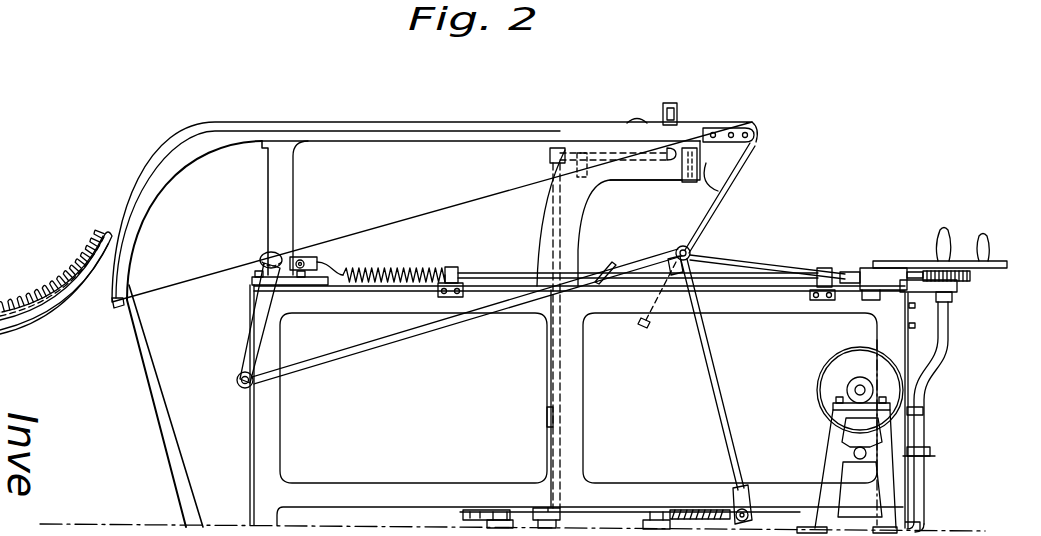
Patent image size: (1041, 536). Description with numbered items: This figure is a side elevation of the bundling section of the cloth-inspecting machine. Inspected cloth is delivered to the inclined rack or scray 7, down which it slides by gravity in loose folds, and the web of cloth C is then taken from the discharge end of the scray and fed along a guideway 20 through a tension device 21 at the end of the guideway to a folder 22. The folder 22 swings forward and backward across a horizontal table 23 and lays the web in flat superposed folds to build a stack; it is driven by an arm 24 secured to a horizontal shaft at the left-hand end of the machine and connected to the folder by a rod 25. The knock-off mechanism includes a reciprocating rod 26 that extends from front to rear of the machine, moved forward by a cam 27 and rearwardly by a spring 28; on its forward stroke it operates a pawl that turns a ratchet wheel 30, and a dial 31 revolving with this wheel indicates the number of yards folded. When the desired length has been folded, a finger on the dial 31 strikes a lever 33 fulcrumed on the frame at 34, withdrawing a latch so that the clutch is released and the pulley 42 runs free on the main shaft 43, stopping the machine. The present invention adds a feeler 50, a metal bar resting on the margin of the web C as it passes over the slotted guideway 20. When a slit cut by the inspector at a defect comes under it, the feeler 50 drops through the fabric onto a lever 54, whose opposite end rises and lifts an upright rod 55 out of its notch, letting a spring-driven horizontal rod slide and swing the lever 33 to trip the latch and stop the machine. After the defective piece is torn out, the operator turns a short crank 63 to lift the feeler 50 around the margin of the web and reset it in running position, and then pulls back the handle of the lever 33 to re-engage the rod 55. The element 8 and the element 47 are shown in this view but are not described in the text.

The guideway 20 is at (578, 112).
The feeler 50 is at (671, 103).
The tension device 21 is at (757, 130).
The crank 63 is at (720, 188).
The lever 54 is at (645, 165).
The upright rod 55 is at (550, 205).
The folder 22 is at (692, 252).
The cam 27 is at (262, 259).
The spring 28 is at (390, 260).
The reciprocating rod 26 is at (494, 262).
The arm 24 is at (262, 318).
The rod 25 is at (396, 348).
The pawl 8 is at (630, 290).
The horizontal table 23 is at (760, 294).
The dial 31 is at (990, 262).
The ratchet wheel 30 is at (960, 282).
The lever 33 is at (940, 357).
The fulcrum 34 is at (924, 411).
The bracket 47 is at (930, 453).
The pulley 42 is at (818, 385).
The main shaft 43 is at (856, 392).
The web of cloth C is at (52, 288).
The scray 7 is at (50, 318).